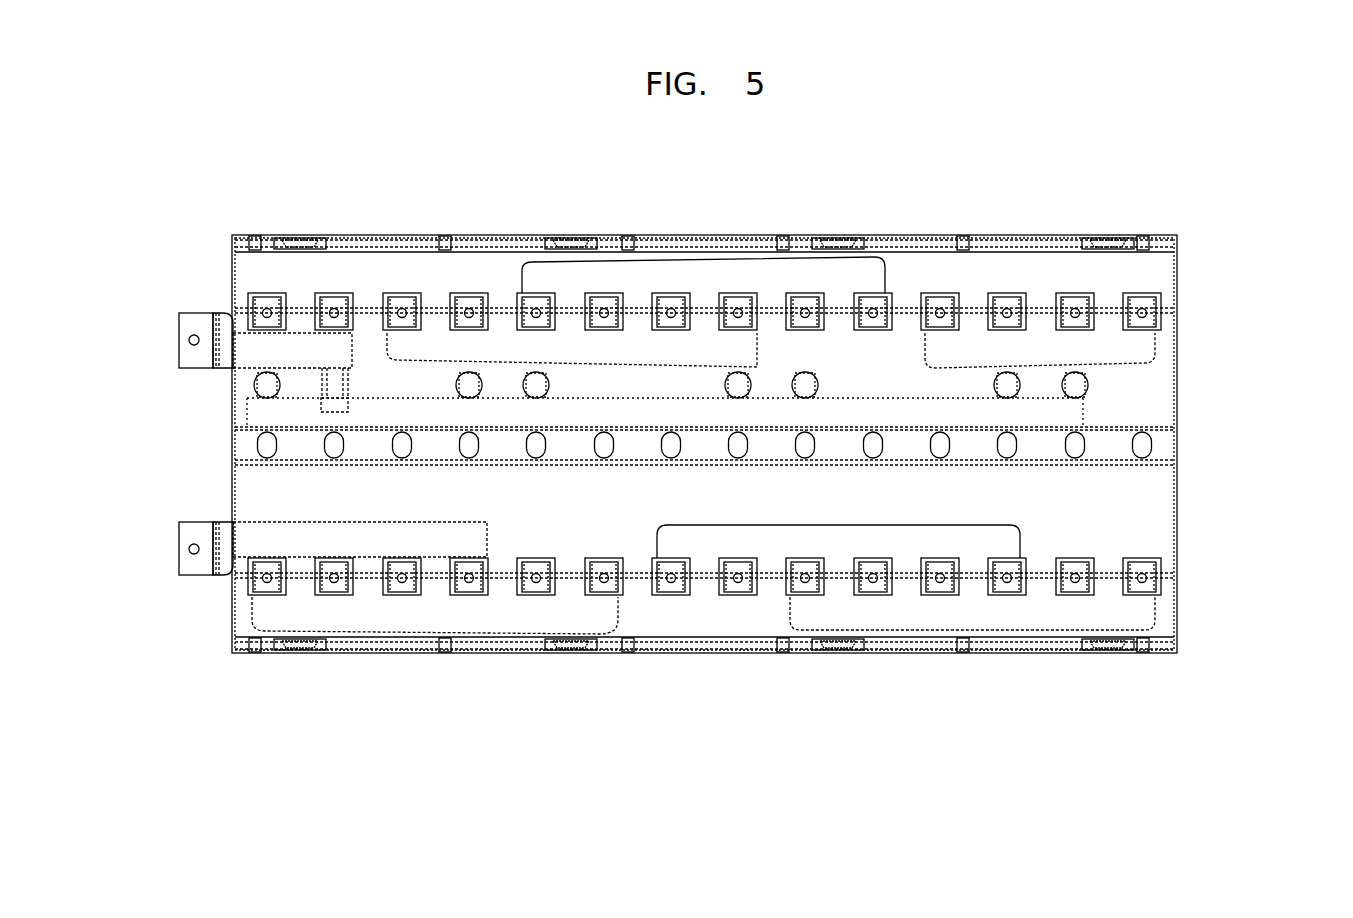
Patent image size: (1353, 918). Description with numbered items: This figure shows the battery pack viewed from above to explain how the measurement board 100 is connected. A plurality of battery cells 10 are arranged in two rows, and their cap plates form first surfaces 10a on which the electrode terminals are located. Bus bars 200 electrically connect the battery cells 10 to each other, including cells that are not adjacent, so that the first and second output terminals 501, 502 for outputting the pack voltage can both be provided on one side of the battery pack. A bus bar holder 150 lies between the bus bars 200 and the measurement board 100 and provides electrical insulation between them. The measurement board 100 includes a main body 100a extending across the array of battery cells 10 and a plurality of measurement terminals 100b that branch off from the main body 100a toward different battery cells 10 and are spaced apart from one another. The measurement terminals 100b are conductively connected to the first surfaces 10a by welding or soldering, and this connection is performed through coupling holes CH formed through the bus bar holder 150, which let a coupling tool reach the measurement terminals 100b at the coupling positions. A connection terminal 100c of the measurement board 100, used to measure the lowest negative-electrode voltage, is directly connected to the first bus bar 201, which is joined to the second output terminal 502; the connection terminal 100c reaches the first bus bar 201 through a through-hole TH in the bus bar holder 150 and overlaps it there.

The battery cell 10 is at (1172, 657).
The first surface 10a is at (1153, 516).
The bus bar holder 150 is at (1153, 272).
The measurement board 100 is at (1262, 364).
The main body 100a is at (1083, 412).
The measurement terminal 100b is at (805, 370).
The connection terminal 100c is at (325, 375).
The bus bar 200 is at (705, 262).
The first bus bar 201 is at (305, 345).
The first output terminal 501 is at (185, 549).
The second output terminal 502 is at (185, 340).
The coupling hole CH is at (536, 371).
The through-hole TH is at (320, 407).